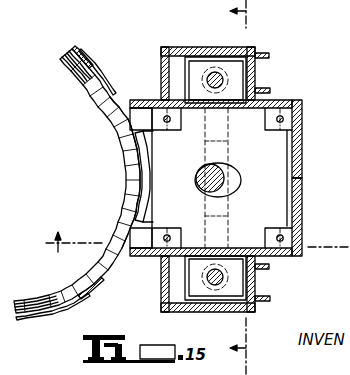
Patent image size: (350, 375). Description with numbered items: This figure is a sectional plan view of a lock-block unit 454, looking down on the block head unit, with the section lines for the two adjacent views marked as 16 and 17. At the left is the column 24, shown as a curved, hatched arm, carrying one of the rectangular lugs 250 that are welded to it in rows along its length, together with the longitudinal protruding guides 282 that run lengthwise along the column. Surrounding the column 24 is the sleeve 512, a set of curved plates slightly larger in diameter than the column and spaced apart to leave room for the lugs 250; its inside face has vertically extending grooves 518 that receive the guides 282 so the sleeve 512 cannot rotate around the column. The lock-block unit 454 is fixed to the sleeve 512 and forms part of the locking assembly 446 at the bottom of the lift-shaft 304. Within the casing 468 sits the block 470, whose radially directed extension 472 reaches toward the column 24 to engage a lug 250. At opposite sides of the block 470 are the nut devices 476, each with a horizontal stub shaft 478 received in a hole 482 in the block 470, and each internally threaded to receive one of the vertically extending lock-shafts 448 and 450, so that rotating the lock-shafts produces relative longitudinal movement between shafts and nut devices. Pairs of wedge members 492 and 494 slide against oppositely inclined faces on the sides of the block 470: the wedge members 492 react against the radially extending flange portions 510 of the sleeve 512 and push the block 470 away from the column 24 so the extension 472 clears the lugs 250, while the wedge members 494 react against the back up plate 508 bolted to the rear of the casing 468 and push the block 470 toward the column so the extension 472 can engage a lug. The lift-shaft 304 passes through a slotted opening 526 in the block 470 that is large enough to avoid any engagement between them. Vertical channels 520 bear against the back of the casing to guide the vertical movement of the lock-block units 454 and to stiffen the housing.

The section line 16- 16 is at (193, 249).
The section line 17- 17 is at (250, 187).
The column 24 is at (92, 93).
The rectangular lug 250 is at (132, 154).
The protruding guide 282 is at (72, 66).
The lift-shaft 304 is at (216, 164).
The locking assembly 446 is at (300, 185).
The lock-shaft 448 is at (227, 280).
The lock-shaft 450 is at (228, 83).
The lock-block unit 454 is at (199, 48).
The casing 468 is at (248, 50).
The block 470 is at (200, 209).
The radially directed extension 472 is at (146, 170).
The nut device 476 is at (266, 56).
The stub shaft 478 is at (205, 141).
The hole 482 is at (195, 156).
The wedge member 492 is at (157, 110).
The wedge member 494 is at (297, 120).
The back up plate 508 is at (302, 203).
The radially extending flange portion 510 is at (129, 115).
The sleeve 512 is at (96, 58).
The groove 518 is at (84, 58).
The vertical channel 520 is at (270, 91).
The slotted opening 526 is at (241, 178).